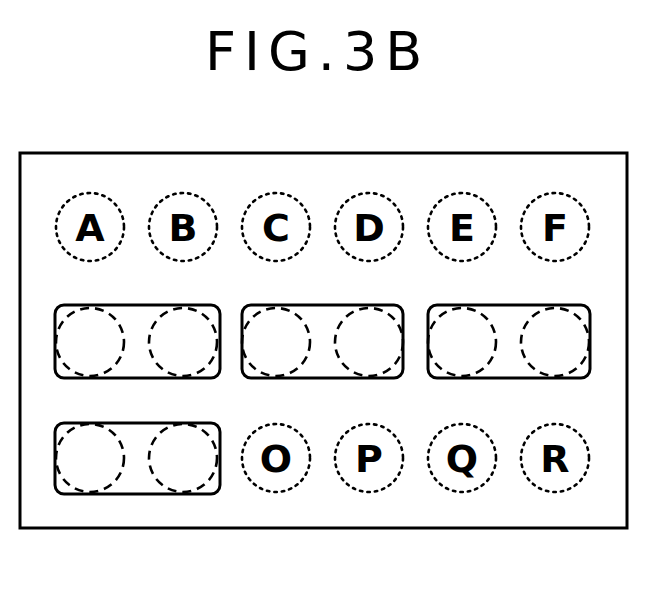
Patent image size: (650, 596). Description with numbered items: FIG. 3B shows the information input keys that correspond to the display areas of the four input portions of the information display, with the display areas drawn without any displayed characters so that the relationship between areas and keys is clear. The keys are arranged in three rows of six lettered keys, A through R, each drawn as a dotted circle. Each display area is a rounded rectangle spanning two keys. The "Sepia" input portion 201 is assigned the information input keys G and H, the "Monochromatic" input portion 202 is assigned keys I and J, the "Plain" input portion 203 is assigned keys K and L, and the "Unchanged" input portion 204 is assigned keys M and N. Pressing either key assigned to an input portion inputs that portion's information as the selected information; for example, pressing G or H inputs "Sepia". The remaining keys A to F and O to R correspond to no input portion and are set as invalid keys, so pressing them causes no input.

The "Sepia" input portion 201 is at (135, 305).
The "Monochromatic" input portion 202 is at (321, 305).
The "Plain" input portion 203 is at (508, 305).
The "Unchanged" input portion 204 is at (130, 494).